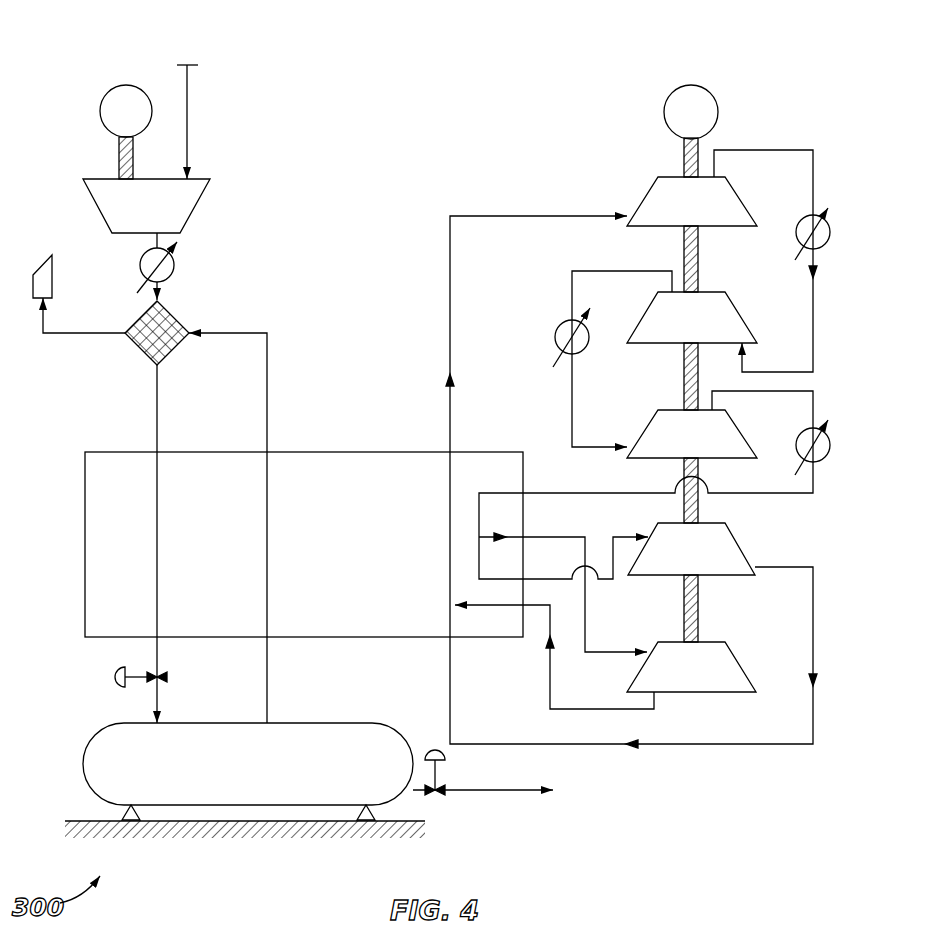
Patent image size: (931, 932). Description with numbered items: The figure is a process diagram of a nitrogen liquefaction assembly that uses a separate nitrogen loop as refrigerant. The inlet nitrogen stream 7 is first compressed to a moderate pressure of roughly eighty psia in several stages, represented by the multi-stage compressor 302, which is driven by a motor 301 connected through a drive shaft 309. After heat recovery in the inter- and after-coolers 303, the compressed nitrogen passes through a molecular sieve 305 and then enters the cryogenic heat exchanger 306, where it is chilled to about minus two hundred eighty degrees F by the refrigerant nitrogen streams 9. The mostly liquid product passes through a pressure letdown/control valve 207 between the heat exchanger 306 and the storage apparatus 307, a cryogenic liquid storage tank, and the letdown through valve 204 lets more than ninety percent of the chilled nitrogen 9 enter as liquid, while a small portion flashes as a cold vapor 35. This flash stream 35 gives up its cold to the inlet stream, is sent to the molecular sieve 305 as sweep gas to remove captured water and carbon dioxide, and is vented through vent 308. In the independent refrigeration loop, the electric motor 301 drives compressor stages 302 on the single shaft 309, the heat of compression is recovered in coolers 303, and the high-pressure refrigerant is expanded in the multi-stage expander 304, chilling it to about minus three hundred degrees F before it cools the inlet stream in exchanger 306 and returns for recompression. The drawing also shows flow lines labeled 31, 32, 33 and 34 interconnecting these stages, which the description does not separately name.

The motor 301 is at (100, 108).
The multi-stage compressor 302 is at (198, 205).
The inter- and after-coolers 303 is at (174, 270).
The multi-stage expander 304 is at (738, 550).
The molecular sieve 305 is at (143, 352).
The cryogenic heat exchanger 306 is at (345, 452).
The storage apparatus 307 is at (313, 723).
The vent 308 is at (56, 272).
The drive shaft 309 is at (119, 158).
The nitrogen stream 7 is at (187, 120).
The refrigerant nitrogen streams 9 is at (157, 700).
The recycle line 31 is at (450, 258).
The compressor bypass line 32 is at (785, 494).
The feed line to turbine 33 is at (553, 537).
The turbine discharge line 34 is at (550, 683).
The flash stream 35 is at (65, 333).
The valve 204 is at (113, 677).
The pressure letdown/control valve 207 is at (435, 750).